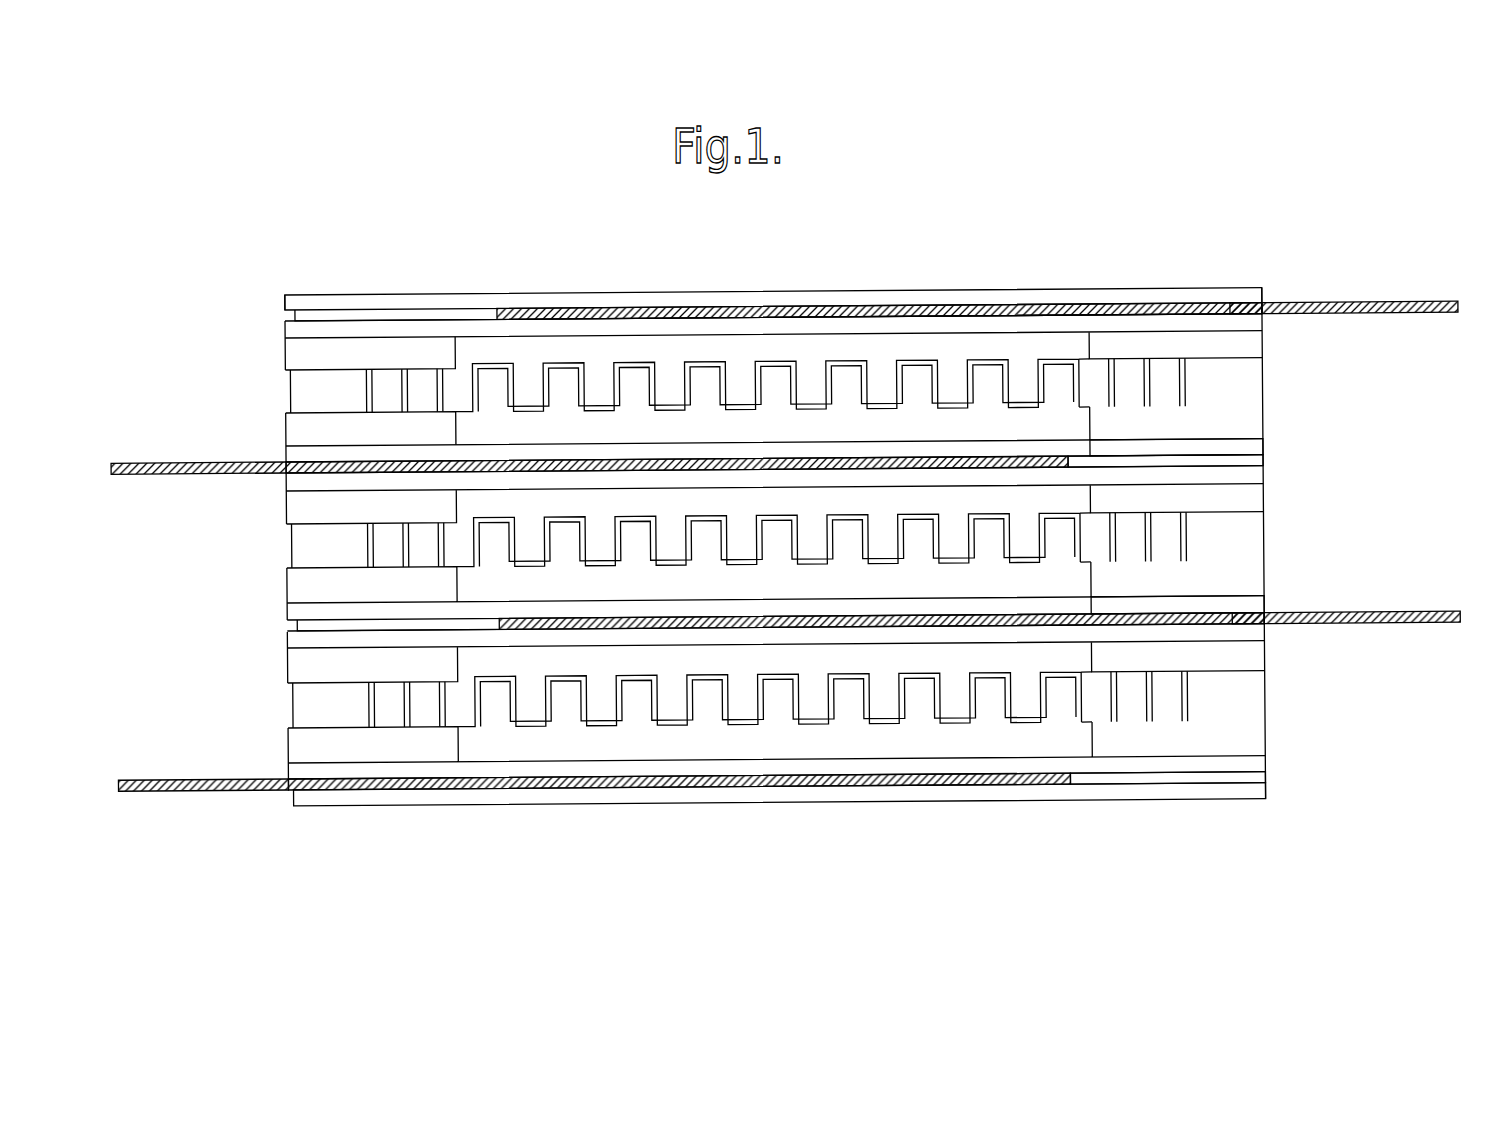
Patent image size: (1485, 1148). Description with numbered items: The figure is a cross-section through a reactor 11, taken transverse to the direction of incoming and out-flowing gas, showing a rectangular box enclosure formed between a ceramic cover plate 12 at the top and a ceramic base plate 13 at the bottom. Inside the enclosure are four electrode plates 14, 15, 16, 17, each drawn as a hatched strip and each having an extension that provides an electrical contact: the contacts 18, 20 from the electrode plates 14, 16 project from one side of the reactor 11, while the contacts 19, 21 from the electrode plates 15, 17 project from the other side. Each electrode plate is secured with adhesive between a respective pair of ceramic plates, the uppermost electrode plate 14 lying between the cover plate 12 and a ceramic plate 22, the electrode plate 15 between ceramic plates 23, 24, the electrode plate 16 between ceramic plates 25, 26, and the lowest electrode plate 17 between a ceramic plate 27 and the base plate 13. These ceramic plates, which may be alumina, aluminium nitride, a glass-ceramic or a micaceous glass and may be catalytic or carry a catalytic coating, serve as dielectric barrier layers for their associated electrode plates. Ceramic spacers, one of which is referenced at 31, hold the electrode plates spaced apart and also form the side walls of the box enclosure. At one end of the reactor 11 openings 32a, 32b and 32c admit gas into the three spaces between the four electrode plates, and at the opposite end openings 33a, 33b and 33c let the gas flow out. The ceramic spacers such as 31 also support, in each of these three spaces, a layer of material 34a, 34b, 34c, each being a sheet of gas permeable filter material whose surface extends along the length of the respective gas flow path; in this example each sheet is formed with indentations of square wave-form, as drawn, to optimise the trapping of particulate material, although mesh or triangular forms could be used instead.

The reactor 11 is at (795, 265).
The ceramic cover plate 12 is at (773, 299).
The ceramic base plate 13 is at (780, 794).
The electrode plate 14 is at (778, 312).
The electrode plate 15 is at (677, 464).
The electrode plate 16 is at (780, 622).
The electrode plate 17 is at (679, 781).
The electrical contact 18 is at (1360, 307).
The electrical contact 19 is at (198, 468).
The electrical contact 20 is at (1362, 617).
The electrical contact 21 is at (203, 785).
The ceramic plate 22 is at (1246, 308).
The ceramic plate 23 is at (1176, 447).
The ceramic plate 24 is at (1165, 461).
The ceramic plate 25 is at (1177, 605).
The ceramic plate 26 is at (1248, 618).
The ceramic plate 27 is at (1167, 778).
The ceramic spacer 31 is at (370, 391).
The opening for gas flow into the reactor 32a is at (773, 339).
The opening for gas flow into the reactor 32b is at (774, 495).
The opening for gas flow into the reactor 32c is at (775, 653).
The opening for gas flow out of the reactor 33a is at (774, 434).
The opening for gas flow out of the reactor 33b is at (775, 590).
The opening for gas flow out of the reactor 33c is at (776, 750).
The layer of material 34a is at (775, 385).
The layer of material 34b is at (776, 539).
The layer of material 34c is at (778, 699).